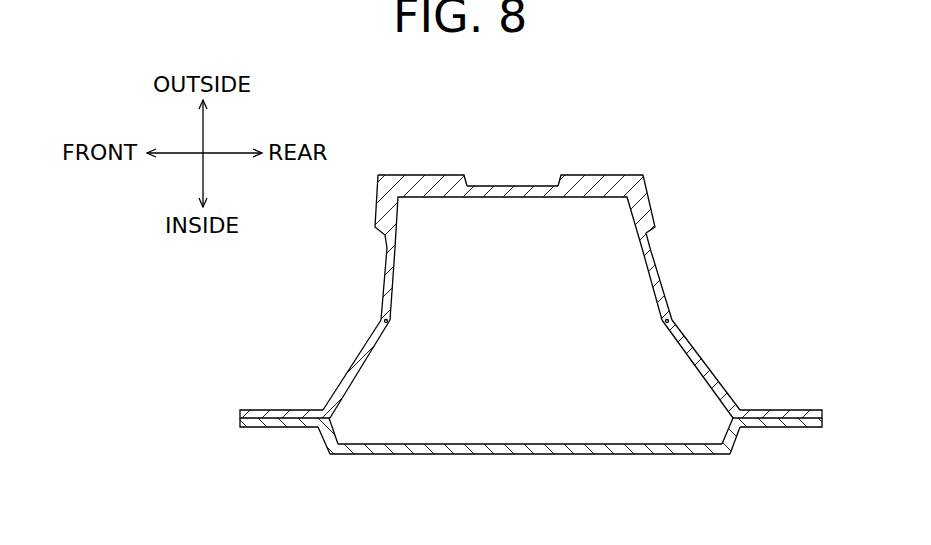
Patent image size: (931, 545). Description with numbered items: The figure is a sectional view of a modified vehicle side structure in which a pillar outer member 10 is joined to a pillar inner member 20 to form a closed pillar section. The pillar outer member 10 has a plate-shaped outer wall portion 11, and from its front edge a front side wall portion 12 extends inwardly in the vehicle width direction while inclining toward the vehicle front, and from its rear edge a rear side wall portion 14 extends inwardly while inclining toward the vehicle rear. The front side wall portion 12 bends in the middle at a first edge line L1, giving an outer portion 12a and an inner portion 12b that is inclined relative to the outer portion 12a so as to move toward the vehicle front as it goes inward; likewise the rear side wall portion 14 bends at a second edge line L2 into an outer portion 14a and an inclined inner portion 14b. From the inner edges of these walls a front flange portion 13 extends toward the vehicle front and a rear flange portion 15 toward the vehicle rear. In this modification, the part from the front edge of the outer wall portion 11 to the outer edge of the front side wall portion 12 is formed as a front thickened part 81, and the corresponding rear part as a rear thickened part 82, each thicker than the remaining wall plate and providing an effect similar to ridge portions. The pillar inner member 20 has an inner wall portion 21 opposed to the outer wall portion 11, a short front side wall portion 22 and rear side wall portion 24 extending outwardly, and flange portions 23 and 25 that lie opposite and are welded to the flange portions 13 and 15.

The pillar outer member 10 is at (529, 267).
The outer wall portion 11 is at (512, 186).
The front thickened part 81 is at (428, 173).
The rear thickened part 82 is at (607, 173).
The front side wall portion 12 is at (314, 333).
The outer portion (front outer portion) 12a is at (383, 265).
The inner portion (front inner portion) 12b is at (337, 369).
The flange portion (front flange portion) 13 is at (257, 408).
The rear side wall portion 14 is at (733, 333).
The outer portion (rear outer portion) 14a is at (658, 266).
The inner portion (rear inner portion) 14b is at (703, 366).
The flange portion (rear flange portion) 15 is at (795, 408).
The pillar inner member 20 is at (531, 462).
The inner wall portion 21 is at (528, 456).
The front side wall portion 22 is at (327, 444).
The flange portion 23 is at (257, 430).
The rear side wall portion 24 is at (735, 445).
The flange portion 25 is at (793, 428).
The edge line (first edge line) L1 is at (389, 324).
The edge line (second edge line) L2 is at (663, 324).